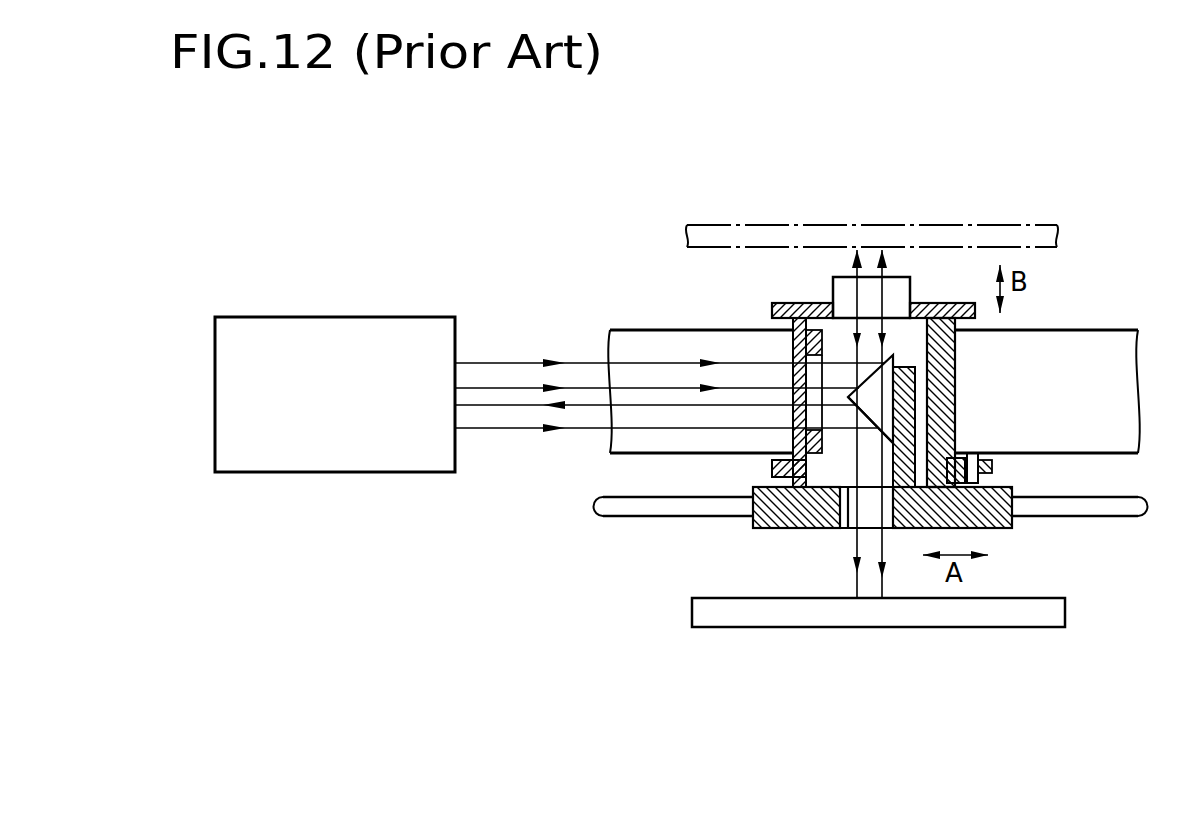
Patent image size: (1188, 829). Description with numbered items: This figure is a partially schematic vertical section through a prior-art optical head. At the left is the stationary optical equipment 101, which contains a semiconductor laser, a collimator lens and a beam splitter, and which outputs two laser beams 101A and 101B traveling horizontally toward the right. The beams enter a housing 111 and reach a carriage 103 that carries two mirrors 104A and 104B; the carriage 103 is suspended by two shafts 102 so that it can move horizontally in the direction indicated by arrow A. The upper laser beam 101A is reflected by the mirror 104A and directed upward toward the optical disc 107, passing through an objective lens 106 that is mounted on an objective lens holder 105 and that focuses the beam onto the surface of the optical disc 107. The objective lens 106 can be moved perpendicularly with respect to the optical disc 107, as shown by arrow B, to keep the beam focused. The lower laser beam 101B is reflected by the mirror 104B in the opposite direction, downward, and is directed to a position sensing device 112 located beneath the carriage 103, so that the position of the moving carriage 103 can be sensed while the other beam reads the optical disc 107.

The stationary optical equipment 101 is at (395, 460).
The laser beam 101A is at (493, 387).
The laser beam 101B is at (520, 407).
The shafts 102 is at (642, 520).
The carriage 103 is at (790, 517).
The mirror 104A is at (866, 365).
The mirror 104B is at (866, 420).
The objective lens holder 105 is at (938, 307).
The objective lens 106 is at (843, 283).
The optical disc 107 is at (717, 238).
The optical housing tube 111 is at (1117, 438).
The position sensing device 112 is at (1020, 615).